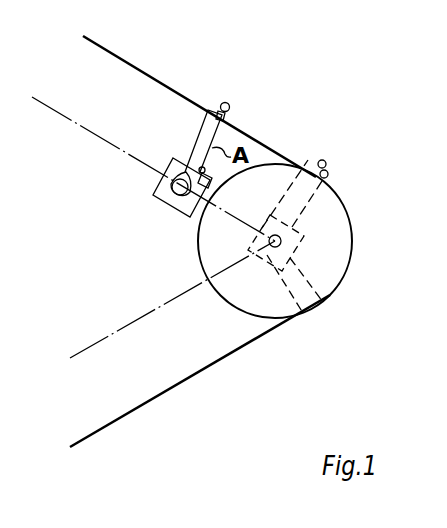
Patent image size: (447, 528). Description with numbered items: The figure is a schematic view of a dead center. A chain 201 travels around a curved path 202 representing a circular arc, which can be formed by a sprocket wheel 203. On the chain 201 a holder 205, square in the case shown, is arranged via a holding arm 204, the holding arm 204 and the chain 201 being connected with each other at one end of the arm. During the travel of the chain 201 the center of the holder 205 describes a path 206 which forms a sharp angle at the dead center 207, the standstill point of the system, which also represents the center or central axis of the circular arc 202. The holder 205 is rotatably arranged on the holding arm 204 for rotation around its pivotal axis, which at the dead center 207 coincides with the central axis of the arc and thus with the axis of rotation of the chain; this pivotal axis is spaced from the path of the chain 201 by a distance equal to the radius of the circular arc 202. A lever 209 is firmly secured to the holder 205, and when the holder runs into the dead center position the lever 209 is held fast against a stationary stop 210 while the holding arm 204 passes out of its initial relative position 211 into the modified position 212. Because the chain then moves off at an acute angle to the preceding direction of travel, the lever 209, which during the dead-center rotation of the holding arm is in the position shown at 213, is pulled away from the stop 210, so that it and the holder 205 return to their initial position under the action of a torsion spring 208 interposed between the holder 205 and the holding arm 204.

The chain 201 is at (245, 131).
The curved path 202 is at (351, 222).
The sprocket wheel 203 is at (337, 270).
The holding arm 204 is at (205, 135).
The holder 205 is at (173, 170).
The path 206 is at (128, 323).
The dead center 207 is at (282, 242).
The torsion spring 208 is at (93, 134).
The lever 209 is at (224, 103).
The stop 210 is at (328, 171).
The initial relative position 211 is at (308, 193).
The modified position 212 is at (310, 297).
The lever position 213 is at (322, 160).